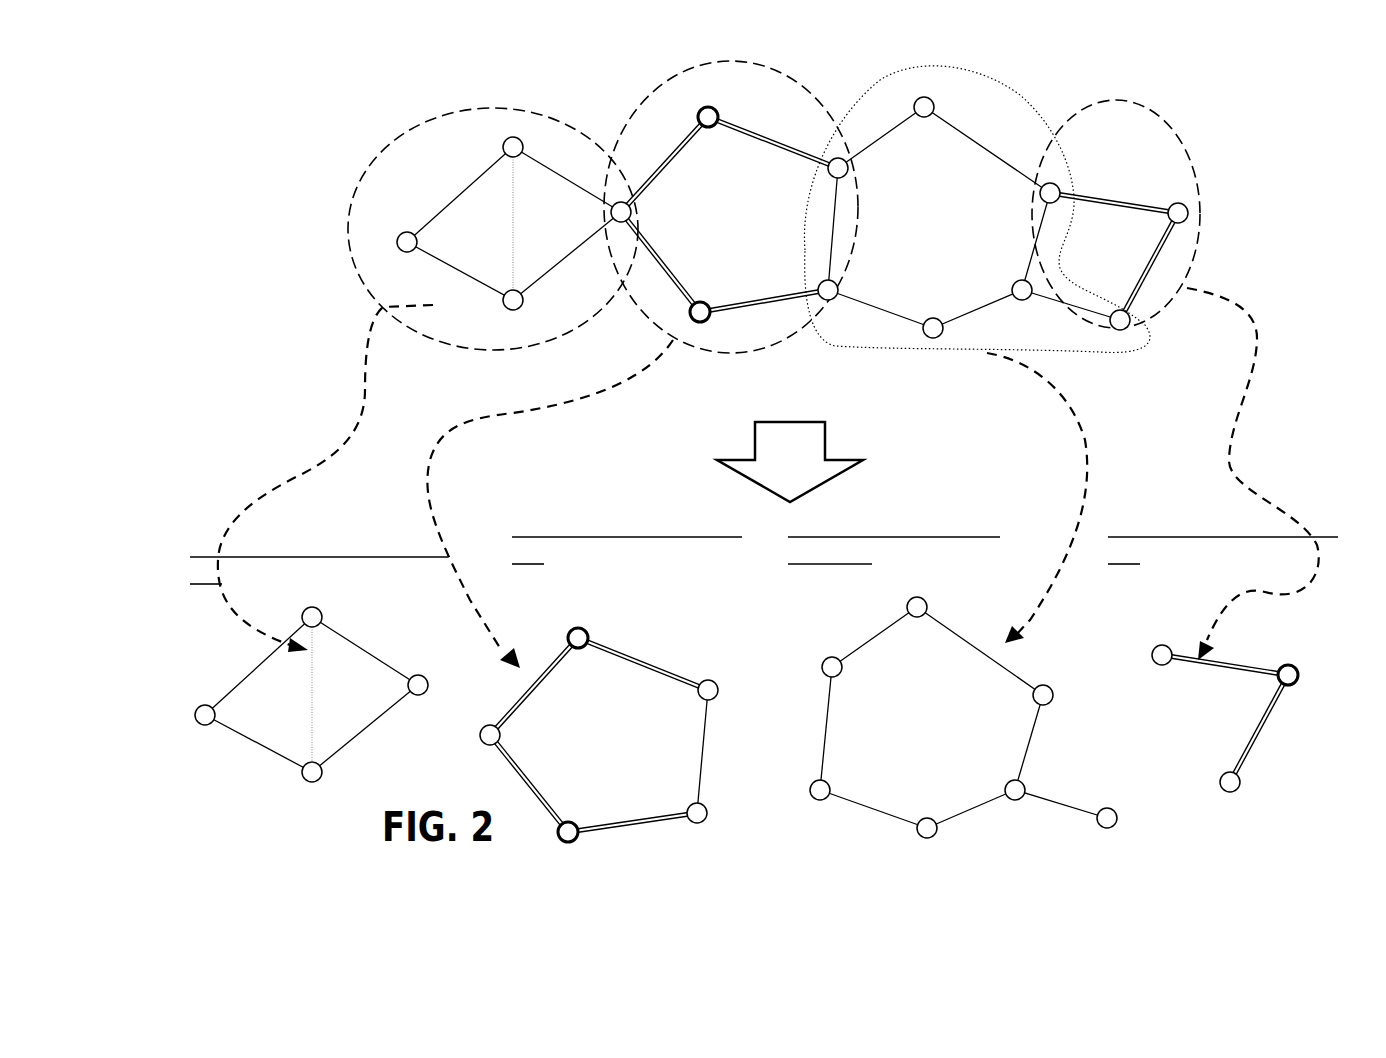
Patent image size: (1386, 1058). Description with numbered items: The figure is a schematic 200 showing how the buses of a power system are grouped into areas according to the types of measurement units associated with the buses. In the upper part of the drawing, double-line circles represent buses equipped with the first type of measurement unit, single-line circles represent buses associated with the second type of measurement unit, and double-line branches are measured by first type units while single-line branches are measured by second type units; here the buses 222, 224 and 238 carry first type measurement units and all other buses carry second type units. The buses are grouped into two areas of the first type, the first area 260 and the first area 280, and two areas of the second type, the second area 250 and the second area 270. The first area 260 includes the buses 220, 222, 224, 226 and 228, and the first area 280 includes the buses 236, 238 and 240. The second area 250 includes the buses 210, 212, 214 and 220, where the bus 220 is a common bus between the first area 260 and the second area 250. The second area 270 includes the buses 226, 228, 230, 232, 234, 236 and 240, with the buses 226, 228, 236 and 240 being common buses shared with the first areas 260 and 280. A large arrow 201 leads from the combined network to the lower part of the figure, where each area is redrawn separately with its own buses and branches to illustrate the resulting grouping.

The observed area diagram 200 is at (406, 896).
The transformation arrow 201 is at (790, 462).
The bus 210 is at (397, 245).
The bus 212 is at (505, 152).
The bus 214 is at (523, 305).
The bus 220 is at (632, 215).
The bus 222 is at (728, 113).
The bus 224 is at (700, 302).
The bus 226 is at (835, 180).
The bus 228 is at (822, 282).
The bus 230 is at (920, 97).
The bus 232 is at (937, 318).
The bus 234 is at (1028, 300).
The bus 236 is at (1038, 203).
The bus 238 is at (1167, 213).
The bus 240 is at (1110, 312).
The second area 250 is at (348, 223).
The first area 260 is at (752, 352).
The second area 270 is at (922, 345).
The first area 280 is at (1200, 195).